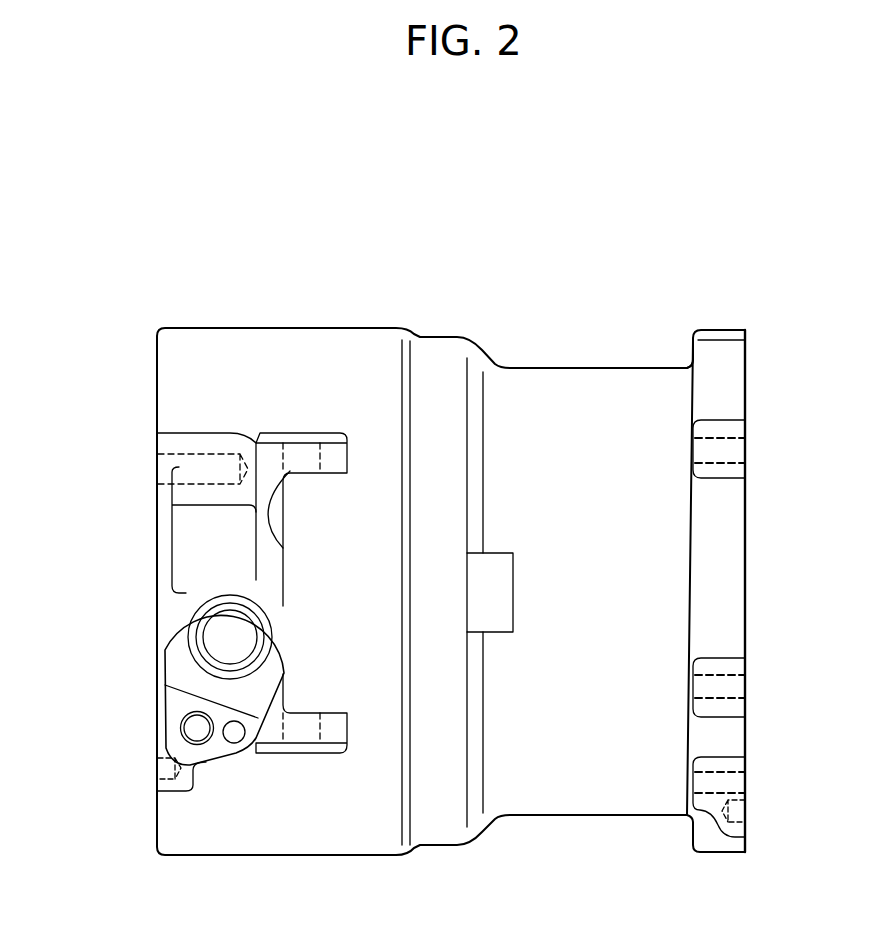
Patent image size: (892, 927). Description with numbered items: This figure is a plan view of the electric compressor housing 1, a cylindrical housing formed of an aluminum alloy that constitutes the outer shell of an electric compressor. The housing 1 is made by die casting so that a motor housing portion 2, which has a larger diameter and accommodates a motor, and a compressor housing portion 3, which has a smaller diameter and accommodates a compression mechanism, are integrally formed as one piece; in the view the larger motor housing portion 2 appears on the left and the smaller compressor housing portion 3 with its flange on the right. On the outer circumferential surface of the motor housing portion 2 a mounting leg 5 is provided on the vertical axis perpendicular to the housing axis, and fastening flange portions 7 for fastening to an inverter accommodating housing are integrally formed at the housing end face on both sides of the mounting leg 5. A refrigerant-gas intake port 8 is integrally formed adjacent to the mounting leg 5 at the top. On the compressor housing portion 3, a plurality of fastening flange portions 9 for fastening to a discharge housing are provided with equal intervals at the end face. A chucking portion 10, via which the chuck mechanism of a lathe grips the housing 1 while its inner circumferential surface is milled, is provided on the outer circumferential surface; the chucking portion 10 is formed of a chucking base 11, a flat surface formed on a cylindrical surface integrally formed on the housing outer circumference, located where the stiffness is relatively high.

The electric compressor housing 1 is at (482, 278).
The motor housing portion 2 is at (303, 827).
The compressor housing portion 3 is at (595, 795).
The mounting leg 5 is at (302, 450).
The fastening flange portion 7 is at (170, 463).
The refrigerant-gas intake port 8 is at (185, 653).
The fastening flange portion 9 is at (725, 450).
The chucking portion 10 is at (515, 565).
The chucking base 11 is at (500, 610).